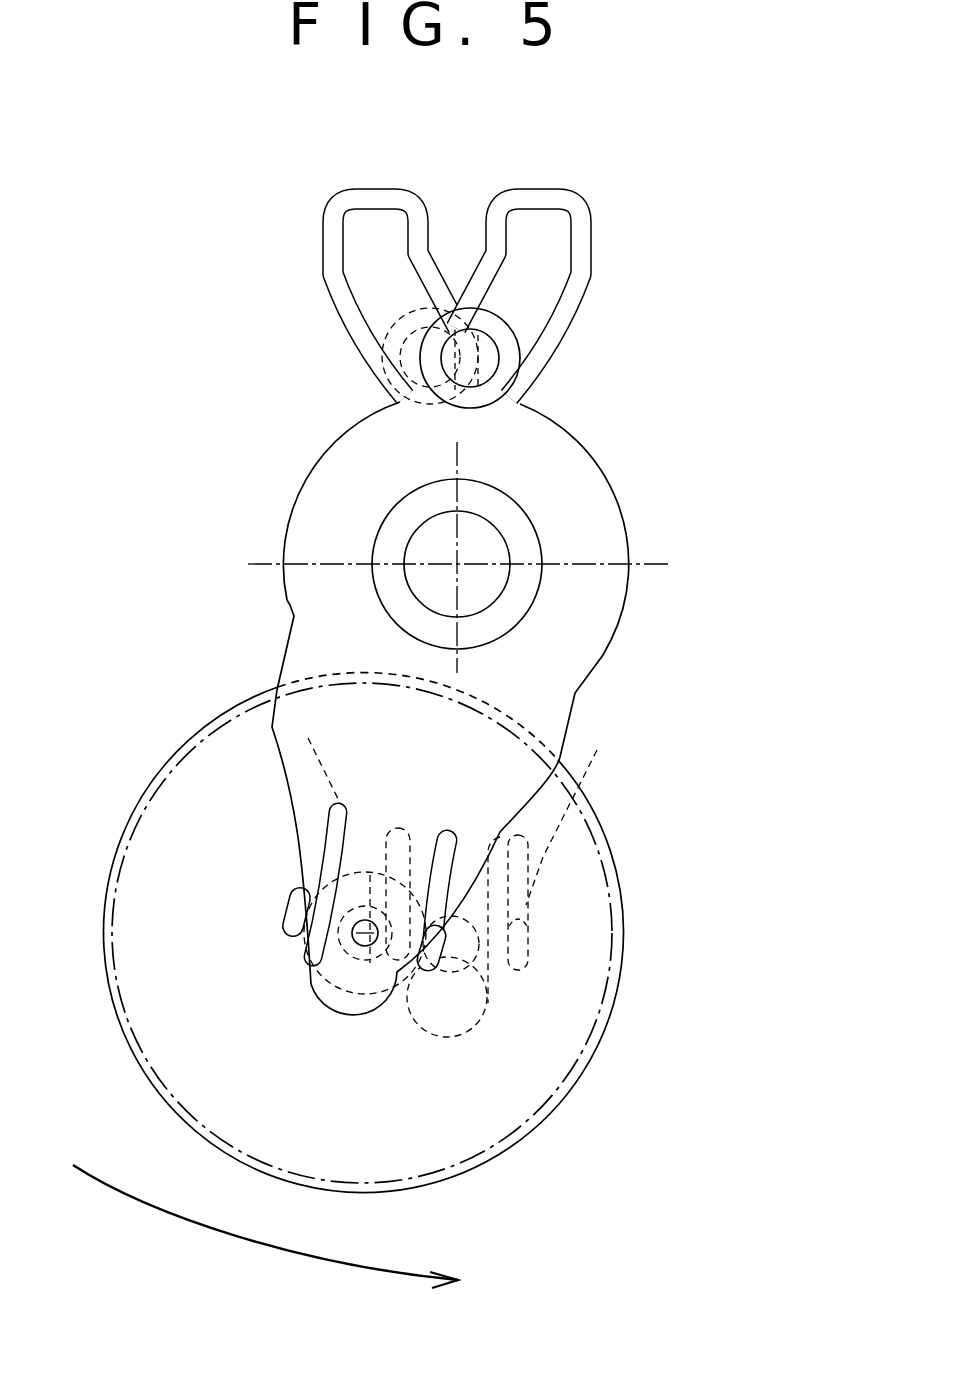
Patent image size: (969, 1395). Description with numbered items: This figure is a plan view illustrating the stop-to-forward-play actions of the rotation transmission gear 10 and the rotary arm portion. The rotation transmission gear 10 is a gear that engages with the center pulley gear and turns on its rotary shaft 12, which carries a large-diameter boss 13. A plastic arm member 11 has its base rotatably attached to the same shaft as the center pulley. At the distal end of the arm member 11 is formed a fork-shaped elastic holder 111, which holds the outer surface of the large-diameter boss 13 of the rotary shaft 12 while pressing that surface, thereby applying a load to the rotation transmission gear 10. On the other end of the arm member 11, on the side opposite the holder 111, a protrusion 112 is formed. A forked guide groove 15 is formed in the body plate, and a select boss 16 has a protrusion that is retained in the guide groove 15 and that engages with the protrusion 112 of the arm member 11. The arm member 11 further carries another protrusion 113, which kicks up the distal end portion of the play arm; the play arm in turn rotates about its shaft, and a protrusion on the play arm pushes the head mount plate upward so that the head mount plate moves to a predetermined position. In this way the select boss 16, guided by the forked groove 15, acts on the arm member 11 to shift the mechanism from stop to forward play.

The rotation transmission gear 10 is at (620, 917).
The arm member 11 is at (557, 686).
The fork-shaped elastic holder 111 is at (497, 1057).
The protrusion 112 is at (505, 392).
The protrusion 113 is at (363, 933).
The rotary shaft 12 is at (347, 903).
The large-diameter boss 13 is at (350, 913).
The forked guide groove 15 is at (552, 230).
The select boss 16 is at (493, 318).